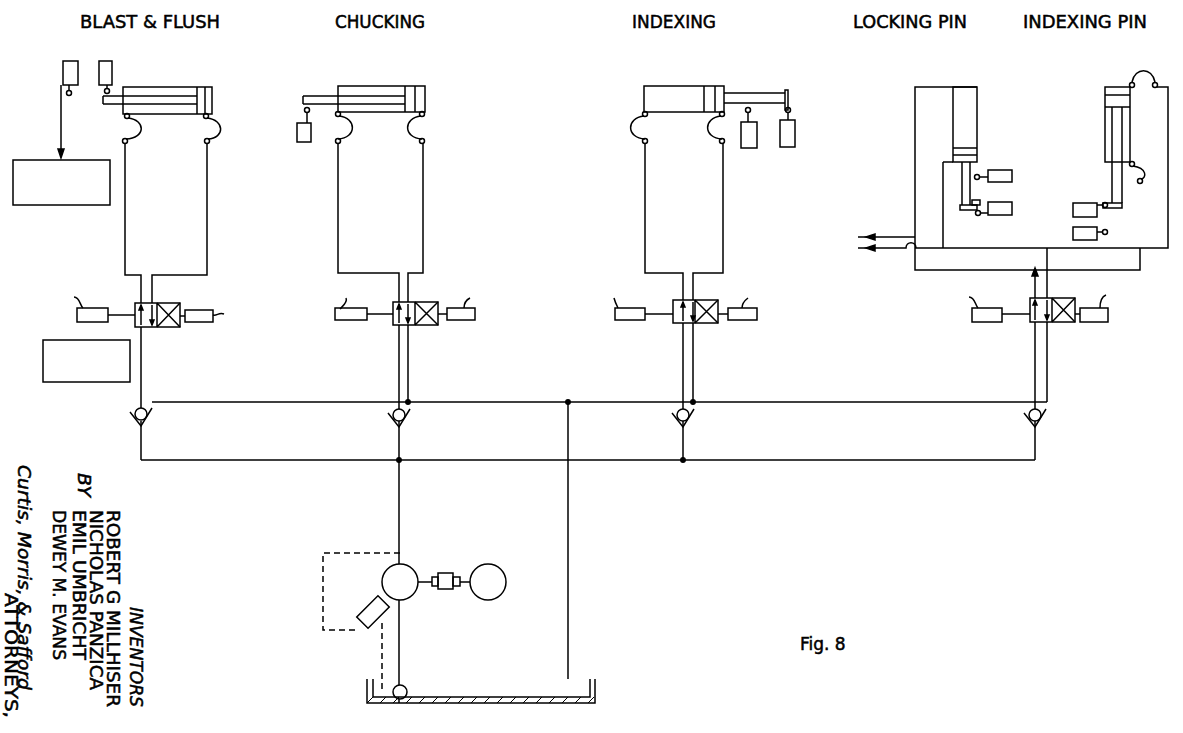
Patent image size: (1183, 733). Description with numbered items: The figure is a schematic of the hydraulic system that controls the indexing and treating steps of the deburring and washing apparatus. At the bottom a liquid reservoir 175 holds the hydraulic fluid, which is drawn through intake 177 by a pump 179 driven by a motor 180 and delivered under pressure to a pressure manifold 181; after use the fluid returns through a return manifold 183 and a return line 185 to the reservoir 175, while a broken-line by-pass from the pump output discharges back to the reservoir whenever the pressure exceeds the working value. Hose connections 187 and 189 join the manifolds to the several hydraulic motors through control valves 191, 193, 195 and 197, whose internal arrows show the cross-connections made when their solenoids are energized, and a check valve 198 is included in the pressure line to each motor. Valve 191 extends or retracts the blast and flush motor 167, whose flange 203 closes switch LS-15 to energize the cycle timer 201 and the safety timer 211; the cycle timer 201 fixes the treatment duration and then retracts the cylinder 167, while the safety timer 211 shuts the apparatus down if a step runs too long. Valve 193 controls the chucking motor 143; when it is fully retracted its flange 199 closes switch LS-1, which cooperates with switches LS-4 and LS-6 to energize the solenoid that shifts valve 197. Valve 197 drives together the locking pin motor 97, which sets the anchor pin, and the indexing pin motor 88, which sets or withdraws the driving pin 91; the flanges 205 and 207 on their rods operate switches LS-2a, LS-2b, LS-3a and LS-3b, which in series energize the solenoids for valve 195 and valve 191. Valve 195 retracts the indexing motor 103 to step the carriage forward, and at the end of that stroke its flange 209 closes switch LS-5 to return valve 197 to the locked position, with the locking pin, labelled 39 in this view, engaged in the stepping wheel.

The blast and flush motor 167 is at (157, 103).
The flange 203 is at (104, 100).
The safety timer 211 is at (78, 205).
The cycle timer 201 is at (56, 380).
The chucking motor 143 is at (363, 105).
The flange 199 is at (304, 101).
The indexing motor 103 is at (730, 103).
The flange 209 is at (789, 98).
The locking pin motor 97 is at (977, 105).
The locking pin 39 is at (960, 203).
The flange 205 is at (976, 204).
The indexing pin motor 88 is at (1130, 132).
The driving pin 91 is at (1123, 193).
The flange 207 is at (1110, 210).
The hose connection 187 is at (137, 291).
The hose connection 189 is at (155, 291).
The control valve 191 is at (166, 326).
The control valve 193 is at (432, 323).
The control valve 195 is at (712, 323).
The control valve 197 is at (1068, 322).
The check valve 198 is at (132, 426).
The return manifold 183 is at (772, 401).
The pressure manifold 181 is at (716, 461).
The return line to reservoir 185 is at (568, 548).
The pump 179 is at (387, 581).
The motor 180 is at (500, 568).
The pump intake line 177 is at (400, 666).
The liquid reservoir 175 is at (598, 690).
The switch LS-15 is at (74, 60).
The switch LS-6 is at (112, 68).
The switch LS-1 is at (309, 142).
The switch LS-5 is at (750, 145).
The switch LS-4 is at (795, 140).
The switch LS-2a is at (1000, 170).
The switch LS-2b is at (1002, 215).
The switch LS-3a is at (1086, 203).
The switch LS-3b is at (1073, 236).